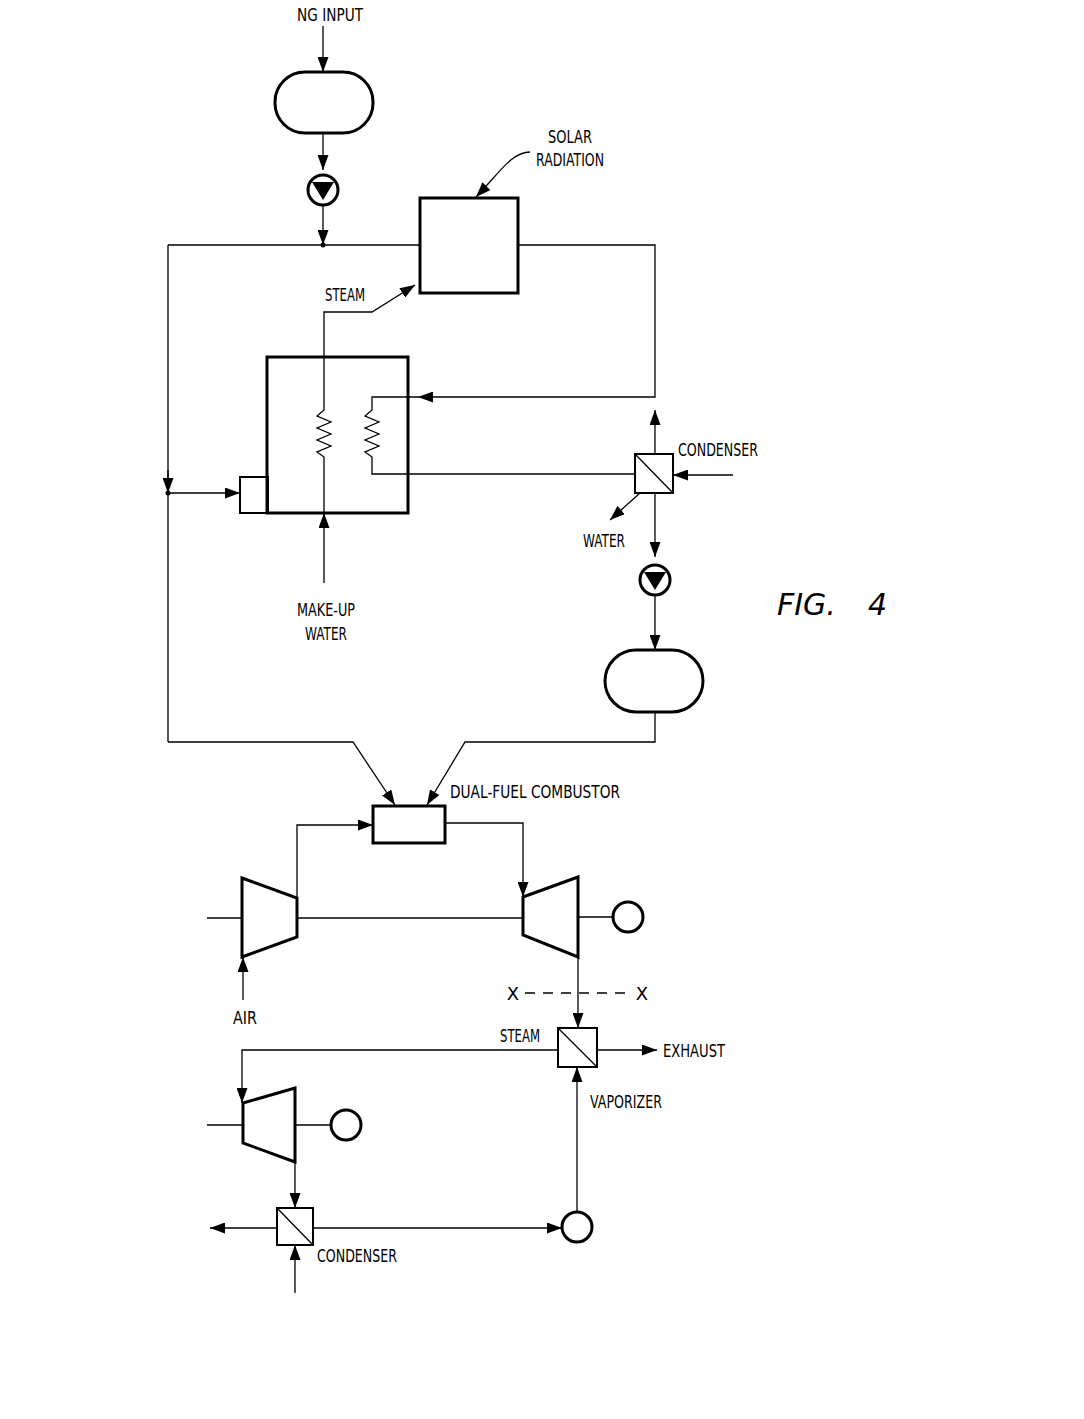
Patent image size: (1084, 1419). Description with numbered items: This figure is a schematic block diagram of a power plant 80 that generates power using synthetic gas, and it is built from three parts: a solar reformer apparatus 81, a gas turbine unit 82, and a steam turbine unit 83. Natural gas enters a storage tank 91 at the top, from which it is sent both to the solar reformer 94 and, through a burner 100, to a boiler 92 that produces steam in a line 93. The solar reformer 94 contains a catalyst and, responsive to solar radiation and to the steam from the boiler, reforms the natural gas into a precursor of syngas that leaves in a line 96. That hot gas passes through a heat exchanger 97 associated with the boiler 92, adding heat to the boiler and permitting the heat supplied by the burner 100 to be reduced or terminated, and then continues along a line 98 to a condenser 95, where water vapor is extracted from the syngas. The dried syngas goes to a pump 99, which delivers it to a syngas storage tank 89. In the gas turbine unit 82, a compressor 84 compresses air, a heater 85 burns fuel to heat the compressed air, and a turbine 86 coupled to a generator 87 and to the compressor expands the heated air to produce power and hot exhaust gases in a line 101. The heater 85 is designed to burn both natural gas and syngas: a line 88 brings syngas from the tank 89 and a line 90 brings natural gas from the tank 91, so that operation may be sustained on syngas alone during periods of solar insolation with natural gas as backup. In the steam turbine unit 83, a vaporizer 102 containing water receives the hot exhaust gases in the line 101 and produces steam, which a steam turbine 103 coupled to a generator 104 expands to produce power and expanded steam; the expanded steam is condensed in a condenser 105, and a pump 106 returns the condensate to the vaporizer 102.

The power plant 80 is at (720, 142).
The solar reformer apparatus 81 is at (722, 552).
The gas turbine unit 82 is at (550, 848).
The steam turbine unit 83 is at (548, 1185).
The compressor 84 is at (262, 882).
The heater 85 is at (408, 843).
The turbine 86 is at (560, 880).
The generator 87 is at (638, 897).
The line 88 is at (590, 740).
The storage tank 89 is at (703, 675).
The line 90 is at (325, 740).
The storage tank 91 is at (373, 97).
The boiler 92 is at (377, 513).
The line 93 is at (327, 338).
The solar reformer 94 is at (518, 215).
The condenser 95 is at (667, 454).
The line 96 is at (655, 323).
The heat exchanger 97 is at (367, 447).
The cooled gas line 98 is at (560, 474).
The pump 99 is at (666, 591).
The burner 100 is at (255, 513).
The line 101 is at (582, 972).
The vaporizer 102 is at (597, 1036).
The steam turbine 103 is at (278, 1090).
The generator 104 is at (352, 1108).
The condenser 105 is at (313, 1213).
The pump 106 is at (592, 1225).